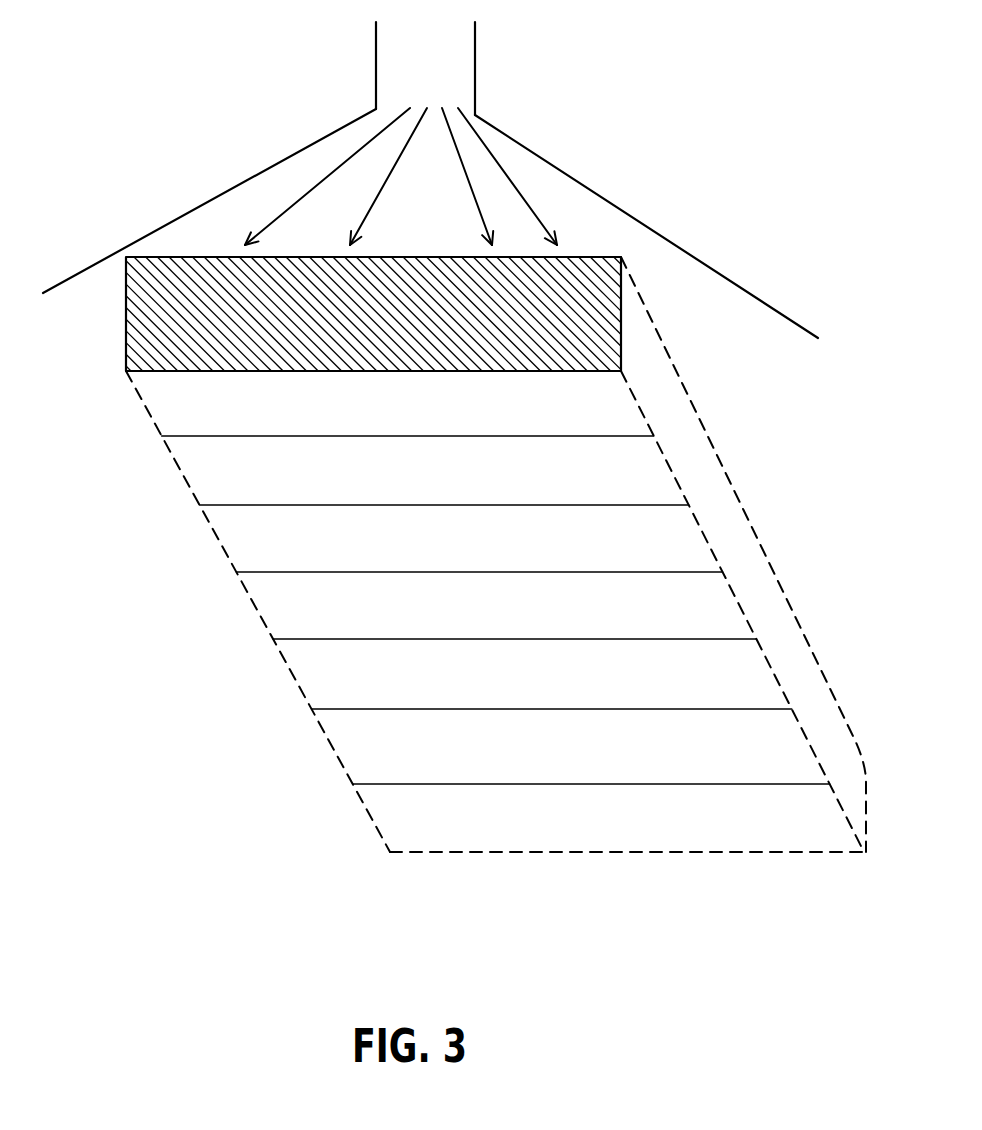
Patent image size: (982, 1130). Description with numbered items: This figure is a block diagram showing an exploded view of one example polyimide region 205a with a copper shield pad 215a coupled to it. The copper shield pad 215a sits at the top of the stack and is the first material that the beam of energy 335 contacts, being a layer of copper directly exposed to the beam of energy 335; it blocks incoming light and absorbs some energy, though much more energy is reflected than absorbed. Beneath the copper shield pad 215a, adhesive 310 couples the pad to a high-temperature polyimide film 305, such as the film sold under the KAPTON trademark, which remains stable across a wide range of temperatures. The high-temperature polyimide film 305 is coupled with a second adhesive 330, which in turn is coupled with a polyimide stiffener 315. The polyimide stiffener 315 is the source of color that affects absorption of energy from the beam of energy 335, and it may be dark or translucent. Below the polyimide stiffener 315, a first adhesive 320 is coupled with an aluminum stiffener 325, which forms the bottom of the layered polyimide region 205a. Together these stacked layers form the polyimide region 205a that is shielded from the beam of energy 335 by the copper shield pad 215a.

The beam of energy 335 is at (458, 87).
The copper shield pad 215a is at (326, 414).
The adhesive 310 is at (406, 479).
The high-temperature polyimide film 305 is at (319, 546).
The second adhesive 330 is at (481, 619).
The polyimide stiffener 315 is at (455, 683).
The first adhesive 320 is at (556, 762).
The aluminum stiffener 325 is at (544, 828).
The polyimide region 205a is at (392, 852).